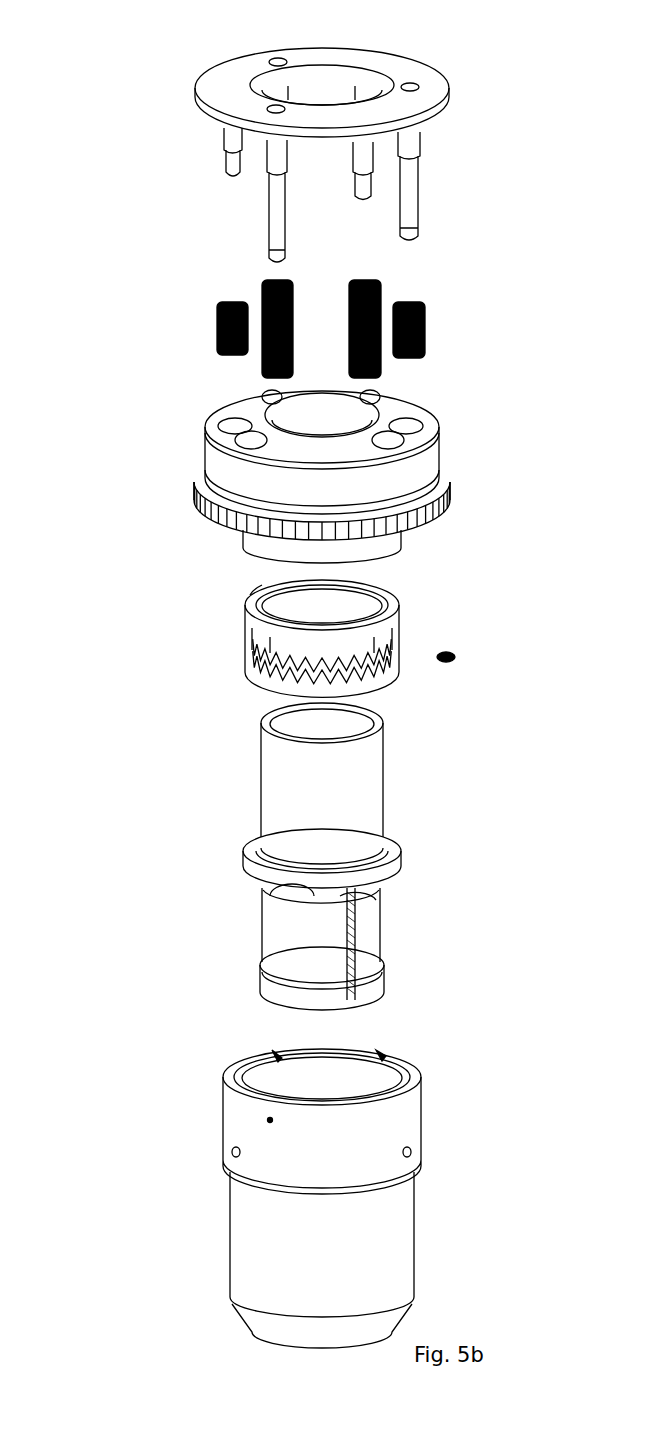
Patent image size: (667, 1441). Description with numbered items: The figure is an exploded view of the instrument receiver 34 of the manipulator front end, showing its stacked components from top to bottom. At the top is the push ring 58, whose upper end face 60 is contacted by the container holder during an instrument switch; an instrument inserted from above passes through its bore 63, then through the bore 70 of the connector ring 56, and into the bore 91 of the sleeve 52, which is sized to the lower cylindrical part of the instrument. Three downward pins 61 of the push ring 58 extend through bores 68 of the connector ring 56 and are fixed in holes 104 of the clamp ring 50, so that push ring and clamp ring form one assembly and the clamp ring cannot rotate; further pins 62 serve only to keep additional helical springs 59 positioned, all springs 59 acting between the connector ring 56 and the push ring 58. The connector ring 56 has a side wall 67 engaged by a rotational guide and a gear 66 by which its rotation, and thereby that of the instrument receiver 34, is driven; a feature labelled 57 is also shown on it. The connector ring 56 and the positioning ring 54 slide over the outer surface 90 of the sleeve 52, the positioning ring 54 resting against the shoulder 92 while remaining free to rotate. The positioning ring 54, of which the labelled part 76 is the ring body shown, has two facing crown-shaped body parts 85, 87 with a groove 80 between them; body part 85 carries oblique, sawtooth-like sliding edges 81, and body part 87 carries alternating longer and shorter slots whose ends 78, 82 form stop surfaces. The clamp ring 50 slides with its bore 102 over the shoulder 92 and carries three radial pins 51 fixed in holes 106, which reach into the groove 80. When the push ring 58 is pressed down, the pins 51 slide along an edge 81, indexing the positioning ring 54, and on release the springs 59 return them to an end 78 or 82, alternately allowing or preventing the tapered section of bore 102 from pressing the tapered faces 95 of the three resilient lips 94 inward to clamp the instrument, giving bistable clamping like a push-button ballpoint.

The instrument receiver 34 is at (90, 1232).
The clamp ring 50 is at (117, 1087).
The radial pins 51 is at (462, 650).
The sleeve 52 is at (127, 767).
The positioning ring 54 is at (155, 595).
The connector ring 56 is at (117, 390).
The gear disc assembly feature 57 is at (6, 413).
The push ring 58 is at (147, 108).
The helical springs 59 is at (218, 318).
The upper end face 60 is at (432, 86).
The pins 61 is at (312, 75).
The further pins 62 is at (230, 162).
The bore 63 is at (336, 92).
The gear 66 is at (470, 540).
The side wall 67 is at (440, 444).
The bores 68 is at (212, 441).
The bore 70 is at (300, 398).
The ring 76 is at (308, 613).
The slot ends 78 is at (405, 618).
The groove 80 is at (380, 690).
The oblique sliding edges 81 is at (252, 668).
The slot ends 82 is at (268, 592).
The crown-shaped body part 85 is at (392, 672).
The crown-shaped body part 87 is at (250, 622).
The outer surface 90 is at (362, 798).
The bore 91 is at (308, 734).
The shoulder 92 is at (397, 858).
The resilient lips 94 is at (262, 940).
The tapered faces 95 is at (265, 996).
The bore 102 is at (296, 1093).
The holes 104 is at (272, 1052).
The holes 106 is at (225, 1140).